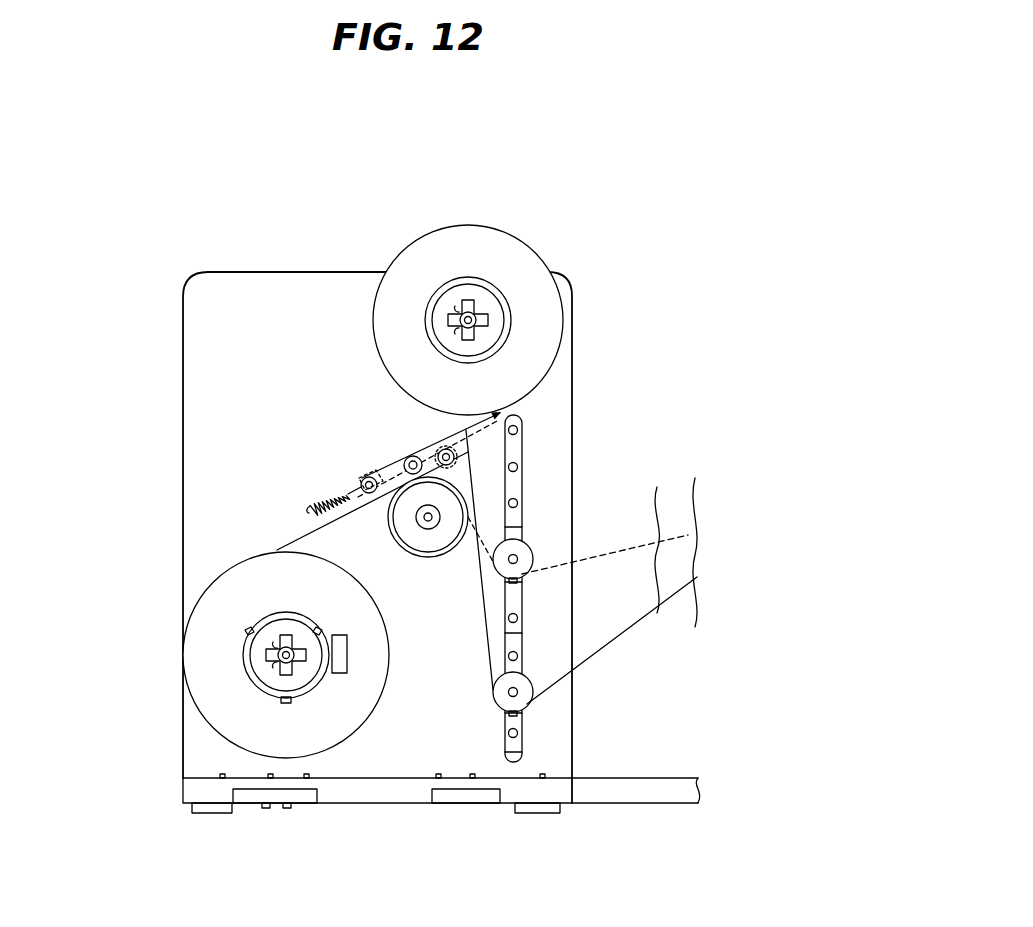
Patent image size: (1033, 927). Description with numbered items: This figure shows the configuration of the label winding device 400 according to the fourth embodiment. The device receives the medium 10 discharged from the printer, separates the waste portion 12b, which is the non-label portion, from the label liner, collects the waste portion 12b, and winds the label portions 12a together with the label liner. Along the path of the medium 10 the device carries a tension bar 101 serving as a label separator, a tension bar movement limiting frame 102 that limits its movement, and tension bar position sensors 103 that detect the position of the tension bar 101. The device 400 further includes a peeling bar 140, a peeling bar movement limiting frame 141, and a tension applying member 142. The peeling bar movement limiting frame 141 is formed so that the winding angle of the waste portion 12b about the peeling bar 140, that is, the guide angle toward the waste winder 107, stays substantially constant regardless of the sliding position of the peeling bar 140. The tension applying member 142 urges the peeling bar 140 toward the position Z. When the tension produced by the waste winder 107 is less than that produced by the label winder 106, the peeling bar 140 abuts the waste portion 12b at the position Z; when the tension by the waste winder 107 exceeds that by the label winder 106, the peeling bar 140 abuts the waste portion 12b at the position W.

The label winding device 400 is at (570, 228).
The waste winder 107 is at (463, 283).
The label winder 106 is at (244, 660).
The label portion 12a is at (303, 537).
The waste portion 12b is at (447, 446).
The peeling bar 140 is at (413, 455).
The peeling bar movement limiting frame 141 is at (378, 476).
The tension applying member 142 is at (318, 499).
The position Z is at (350, 471).
The position W is at (475, 448).
The tension bar position sensor 103 is at (496, 457).
The tension bar 101 is at (522, 545).
The tension bar movement limiting frame 102 is at (507, 640).
The medium 10 is at (612, 553).